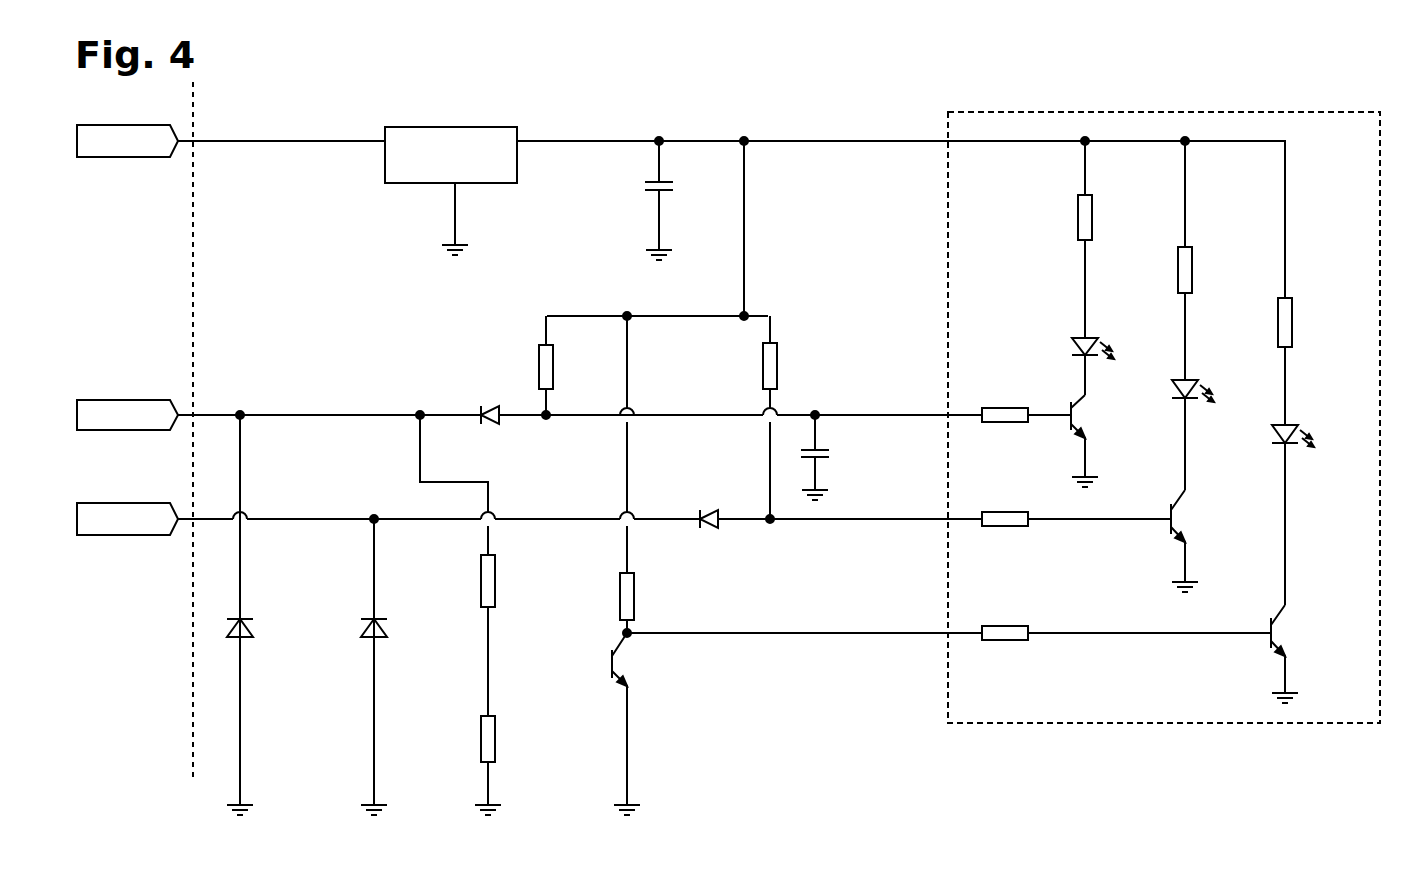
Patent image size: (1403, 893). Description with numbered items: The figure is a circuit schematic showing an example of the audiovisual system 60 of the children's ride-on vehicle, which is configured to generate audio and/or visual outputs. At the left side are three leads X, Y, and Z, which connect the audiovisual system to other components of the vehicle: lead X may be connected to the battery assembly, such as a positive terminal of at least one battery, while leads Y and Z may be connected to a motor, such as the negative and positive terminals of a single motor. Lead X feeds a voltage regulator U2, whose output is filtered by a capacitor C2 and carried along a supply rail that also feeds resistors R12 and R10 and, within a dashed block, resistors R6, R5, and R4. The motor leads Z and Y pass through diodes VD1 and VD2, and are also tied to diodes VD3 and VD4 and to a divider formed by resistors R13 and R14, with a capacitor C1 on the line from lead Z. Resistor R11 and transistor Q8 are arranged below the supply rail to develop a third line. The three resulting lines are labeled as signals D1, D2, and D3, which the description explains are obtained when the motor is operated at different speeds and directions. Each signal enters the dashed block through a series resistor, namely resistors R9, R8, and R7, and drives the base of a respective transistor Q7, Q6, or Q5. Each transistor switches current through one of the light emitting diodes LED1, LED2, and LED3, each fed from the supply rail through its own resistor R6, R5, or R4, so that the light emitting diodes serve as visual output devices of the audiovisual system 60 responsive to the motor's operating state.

The audiovisual system 60 is at (880, 68).
The voltage regulator U2 is at (454, 127).
The capacitor C1 is at (824, 449).
The capacitor C2 is at (666, 180).
The resistor R4 is at (1293, 317).
The resistor R5 is at (1193, 269).
The resistor R6 is at (1093, 217).
The resistor R7 is at (1002, 625).
The resistor R8 is at (1002, 511).
The resistor R9 is at (1002, 407).
The resistor R10 is at (777, 372).
The resistor R11 is at (633, 597).
The resistor R12 is at (553, 374).
The resistor R13 is at (495, 587).
The resistor R14 is at (495, 747).
The diode VD1 is at (480, 406).
The diode VD2 is at (700, 513).
The diode VD3 is at (248, 617).
The diode VD4 is at (382, 617).
The light emitting diode LED1 is at (1086, 344).
The light emitting diode LED2 is at (1186, 386).
The light emitting diode LED3 is at (1286, 430).
The transistor Q5 is at (1282, 630).
The transistor Q6 is at (1182, 516).
The transistor Q7 is at (1082, 413).
The transistor Q8 is at (610, 654).
The signal D1 is at (890, 415).
The signal D2 is at (890, 519).
The signal D3 is at (890, 633).
The lead X is at (127, 141).
The lead Y is at (127, 519).
The lead Z is at (127, 415).